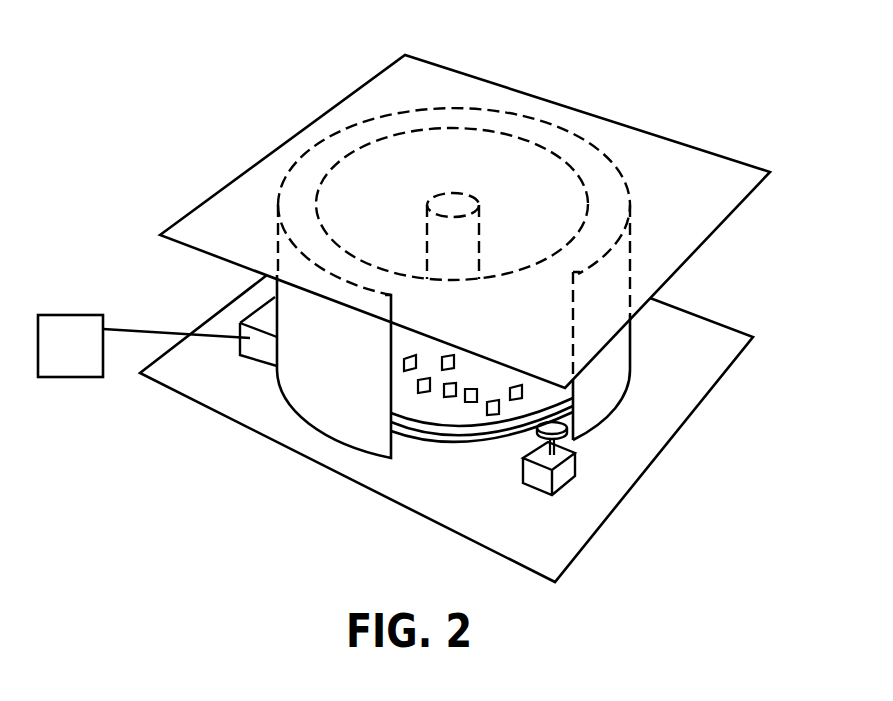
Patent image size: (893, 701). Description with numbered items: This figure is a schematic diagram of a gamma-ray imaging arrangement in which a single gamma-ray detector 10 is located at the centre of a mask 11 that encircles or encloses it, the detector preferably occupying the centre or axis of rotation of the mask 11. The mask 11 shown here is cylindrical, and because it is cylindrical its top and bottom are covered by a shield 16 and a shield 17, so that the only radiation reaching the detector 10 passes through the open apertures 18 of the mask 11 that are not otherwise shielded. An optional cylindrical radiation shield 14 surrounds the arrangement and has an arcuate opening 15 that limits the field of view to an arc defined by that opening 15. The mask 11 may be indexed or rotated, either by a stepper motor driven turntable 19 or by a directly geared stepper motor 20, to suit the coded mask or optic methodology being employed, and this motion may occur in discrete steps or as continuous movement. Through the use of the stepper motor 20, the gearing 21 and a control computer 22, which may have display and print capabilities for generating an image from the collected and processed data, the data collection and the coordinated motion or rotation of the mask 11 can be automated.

The gamma-ray detector 10 is at (453, 207).
The mask 11 is at (583, 187).
The radiation shield 14 is at (608, 365).
The arcuate opening 15 is at (418, 457).
The shield 16 is at (390, 88).
The shield 17 is at (228, 320).
The open apertures 18 is at (407, 368).
The stepper motor driven turntable 19 is at (452, 430).
The stepper motor 20 is at (560, 470).
The gearing 21 is at (547, 427).
The control computer 22 is at (67, 352).